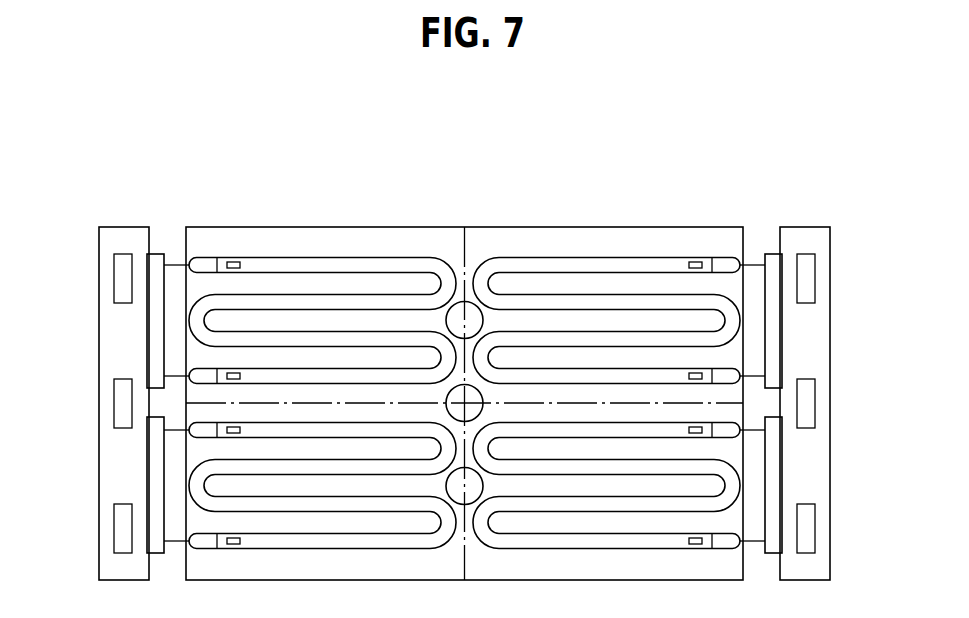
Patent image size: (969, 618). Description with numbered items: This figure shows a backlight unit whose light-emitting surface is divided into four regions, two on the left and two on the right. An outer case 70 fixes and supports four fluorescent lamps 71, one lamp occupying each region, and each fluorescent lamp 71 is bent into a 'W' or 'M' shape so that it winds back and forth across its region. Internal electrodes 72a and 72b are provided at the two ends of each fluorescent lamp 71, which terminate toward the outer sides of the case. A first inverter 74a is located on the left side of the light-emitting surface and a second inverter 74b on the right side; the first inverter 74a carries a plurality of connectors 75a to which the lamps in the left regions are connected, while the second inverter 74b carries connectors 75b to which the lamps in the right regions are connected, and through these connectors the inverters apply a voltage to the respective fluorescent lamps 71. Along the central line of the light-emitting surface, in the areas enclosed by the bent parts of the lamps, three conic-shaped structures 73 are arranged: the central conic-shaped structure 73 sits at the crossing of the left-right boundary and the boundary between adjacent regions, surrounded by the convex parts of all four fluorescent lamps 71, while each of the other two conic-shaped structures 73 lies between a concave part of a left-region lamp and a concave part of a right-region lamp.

The outer case 70 is at (441, 227).
The fluorescent lamp 71 is at (385, 257).
The internal electrode 72a is at (235, 262).
The internal electrode 72b is at (234, 372).
The conic-shaped structure 73 is at (472, 312).
The first inverter 74a is at (108, 368).
The second inverter 74b is at (818, 368).
The connector 75a is at (153, 282).
The connector 75b is at (775, 282).